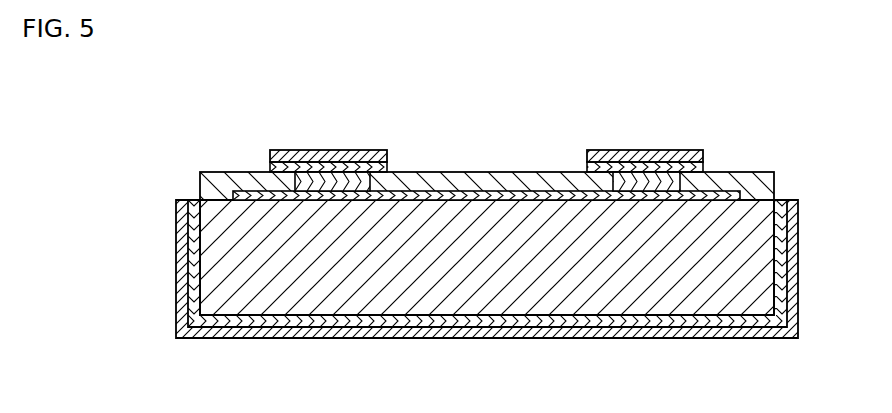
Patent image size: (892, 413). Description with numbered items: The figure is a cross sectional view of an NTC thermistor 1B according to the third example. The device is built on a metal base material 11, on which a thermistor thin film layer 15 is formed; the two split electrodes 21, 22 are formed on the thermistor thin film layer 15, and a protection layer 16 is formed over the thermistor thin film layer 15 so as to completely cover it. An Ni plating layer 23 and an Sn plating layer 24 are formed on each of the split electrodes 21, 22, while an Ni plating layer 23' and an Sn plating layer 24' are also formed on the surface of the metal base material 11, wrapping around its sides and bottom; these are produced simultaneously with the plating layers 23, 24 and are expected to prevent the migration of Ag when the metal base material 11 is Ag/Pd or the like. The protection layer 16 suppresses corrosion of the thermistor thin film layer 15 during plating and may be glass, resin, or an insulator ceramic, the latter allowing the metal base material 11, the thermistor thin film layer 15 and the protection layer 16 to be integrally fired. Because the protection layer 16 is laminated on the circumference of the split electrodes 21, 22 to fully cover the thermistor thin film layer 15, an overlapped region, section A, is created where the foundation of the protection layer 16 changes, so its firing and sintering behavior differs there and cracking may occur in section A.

The NTC thermistor 1B is at (214, 86).
The metal base material 11 is at (410, 302).
The thermistor thin film layer 15 is at (458, 193).
The protection layer 16 is at (513, 173).
The split electrode 21 is at (391, 174).
The split electrode 22 is at (703, 183).
The Ni plating layer 23 is at (486, 129).
The Sn plating layer 24 is at (488, 124).
The Ni plating layer 23' is at (487, 299).
The Sn plating layer 24' is at (487, 299).
The section A is at (600, 150).